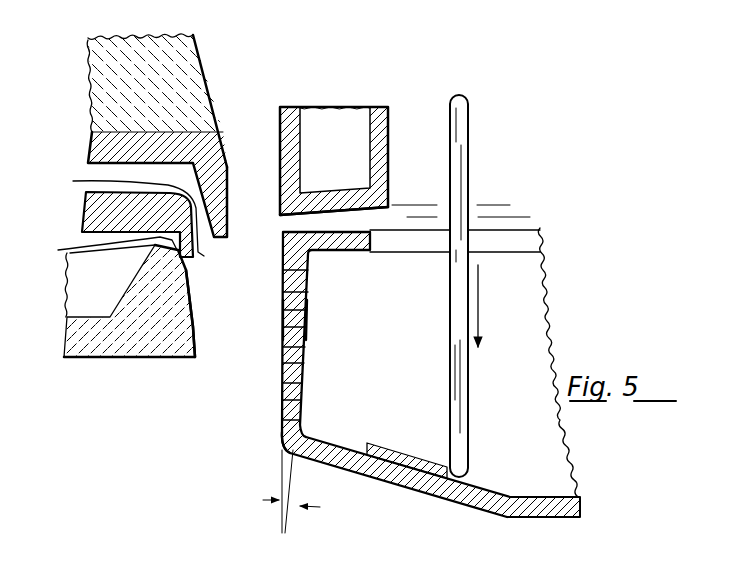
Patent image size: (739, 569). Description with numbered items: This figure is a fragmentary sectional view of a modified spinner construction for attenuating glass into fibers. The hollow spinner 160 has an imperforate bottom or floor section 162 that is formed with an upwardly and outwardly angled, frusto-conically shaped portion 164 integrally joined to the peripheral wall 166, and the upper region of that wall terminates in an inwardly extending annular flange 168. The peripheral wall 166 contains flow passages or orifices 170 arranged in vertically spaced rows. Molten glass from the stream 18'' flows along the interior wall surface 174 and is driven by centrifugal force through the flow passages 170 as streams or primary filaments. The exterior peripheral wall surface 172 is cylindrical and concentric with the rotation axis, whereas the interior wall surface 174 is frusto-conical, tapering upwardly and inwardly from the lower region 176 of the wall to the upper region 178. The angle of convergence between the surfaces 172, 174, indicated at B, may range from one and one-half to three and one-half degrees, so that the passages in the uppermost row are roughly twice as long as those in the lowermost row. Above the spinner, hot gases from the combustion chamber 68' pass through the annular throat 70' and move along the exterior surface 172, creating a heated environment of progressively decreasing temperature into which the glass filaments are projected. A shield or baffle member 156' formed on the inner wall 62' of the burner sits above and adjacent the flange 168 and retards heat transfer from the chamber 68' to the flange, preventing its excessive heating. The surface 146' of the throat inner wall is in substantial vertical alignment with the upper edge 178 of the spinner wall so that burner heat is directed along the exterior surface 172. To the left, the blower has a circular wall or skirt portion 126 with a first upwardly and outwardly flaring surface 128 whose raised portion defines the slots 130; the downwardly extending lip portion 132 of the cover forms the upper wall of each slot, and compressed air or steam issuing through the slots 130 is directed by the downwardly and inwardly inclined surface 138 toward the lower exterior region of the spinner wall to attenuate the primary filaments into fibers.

The combustion chamber 68' is at (170, 100).
The annular throat 70' is at (177, 184).
The circular lip portion 132 is at (118, 210).
The slots or orifices 130 is at (95, 248).
The frusto-conically shaped surface 128 is at (187, 268).
The circular wall or skirt portion 126 is at (160, 283).
The downwardly and inwardly inclined surface 138 is at (196, 332).
The inner wall surface of the throat 146' is at (330, 142).
The inner wall of the combustion burner construction 62' is at (393, 141).
The shield or baffle member 156' is at (362, 192).
The glass stream 18'' is at (497, 286).
The imperforate bottom or floor section 162 is at (553, 497).
The hollow spinner 160 is at (446, 502).
The inwardly extending annular flange 168 is at (345, 253).
The upper region of the spinner wall 178 is at (283, 236).
The flow passages or orifices 170 is at (282, 290).
The peripheral wall 166 is at (290, 336).
The exterior peripheral wall surface 172 is at (279, 318).
The interior wall surface 174 is at (313, 318).
The lower region of the spinner wall 176 is at (282, 440).
The frusto-conically shaped portion 164 is at (337, 446).
The angle of convergence B is at (275, 491).